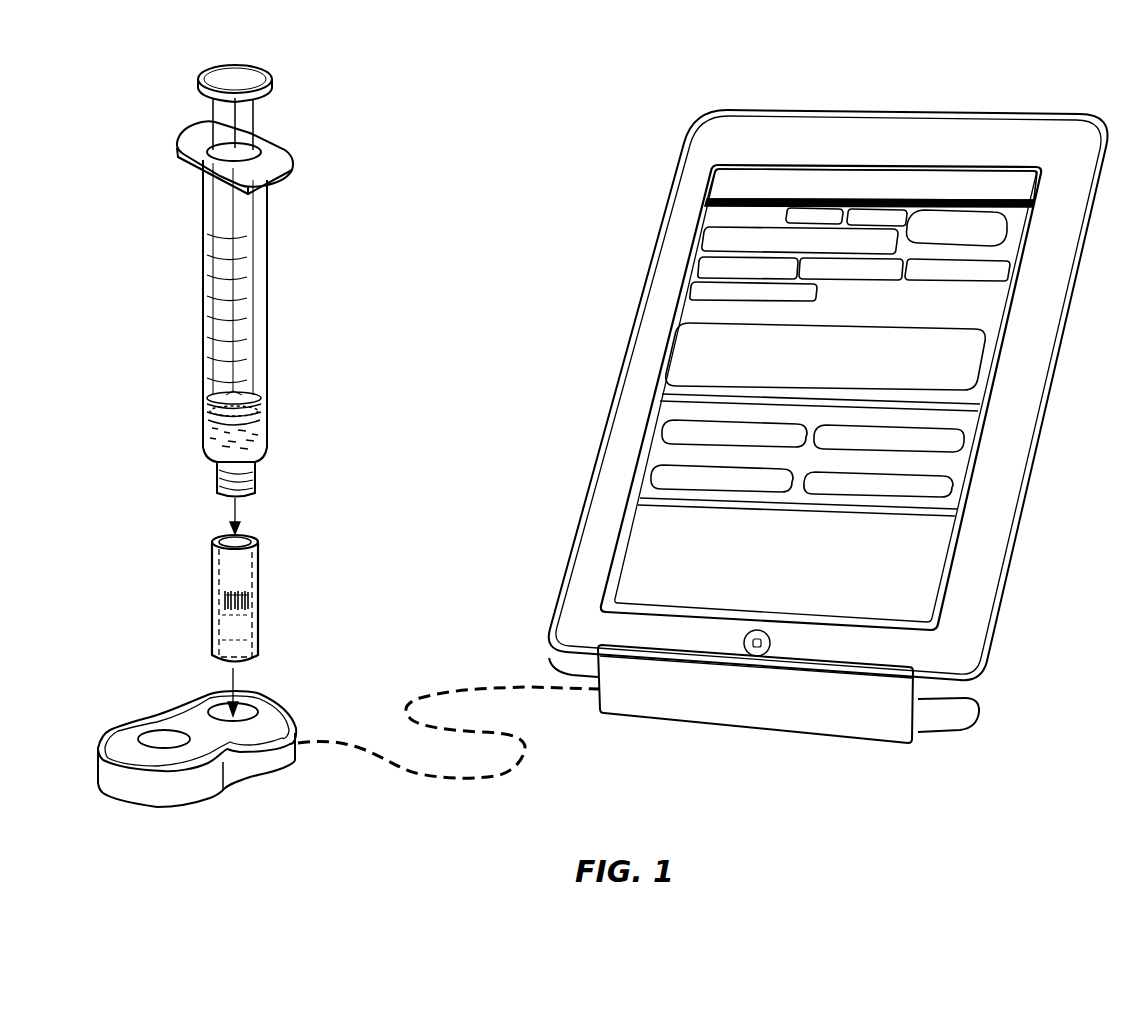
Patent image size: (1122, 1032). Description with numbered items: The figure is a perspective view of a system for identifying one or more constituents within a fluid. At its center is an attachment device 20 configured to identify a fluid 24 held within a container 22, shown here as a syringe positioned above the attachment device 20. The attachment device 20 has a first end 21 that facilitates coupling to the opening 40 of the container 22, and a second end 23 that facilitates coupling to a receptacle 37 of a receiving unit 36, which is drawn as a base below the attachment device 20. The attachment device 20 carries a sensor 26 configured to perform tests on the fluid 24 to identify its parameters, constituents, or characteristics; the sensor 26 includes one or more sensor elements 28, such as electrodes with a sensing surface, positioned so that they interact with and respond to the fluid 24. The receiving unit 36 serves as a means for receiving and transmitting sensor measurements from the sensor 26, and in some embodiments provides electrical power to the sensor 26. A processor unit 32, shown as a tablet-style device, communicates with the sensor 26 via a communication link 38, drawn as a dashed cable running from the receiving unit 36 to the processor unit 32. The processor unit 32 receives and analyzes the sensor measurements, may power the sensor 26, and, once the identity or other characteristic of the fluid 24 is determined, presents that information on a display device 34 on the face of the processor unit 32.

The attachment device 20 is at (238, 576).
The first end 21 is at (253, 536).
The container 22 is at (262, 296).
The second end 23 is at (212, 628).
The fluid 24 is at (268, 437).
The sensor 26 is at (243, 627).
The sensor element 28 is at (240, 597).
The processor unit 32 is at (782, 426).
The display device 34 is at (917, 548).
The receiving unit 36 is at (211, 753).
The receptacle 37 is at (207, 697).
The communication link 38 is at (517, 765).
The opening 40 is at (218, 497).